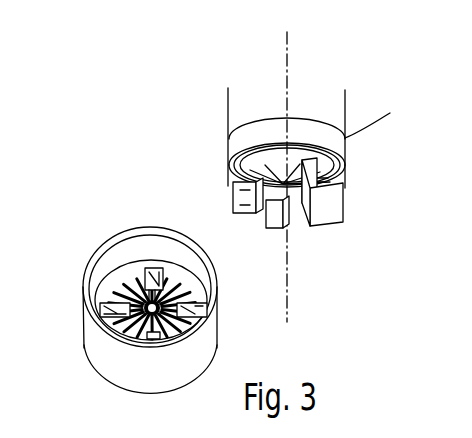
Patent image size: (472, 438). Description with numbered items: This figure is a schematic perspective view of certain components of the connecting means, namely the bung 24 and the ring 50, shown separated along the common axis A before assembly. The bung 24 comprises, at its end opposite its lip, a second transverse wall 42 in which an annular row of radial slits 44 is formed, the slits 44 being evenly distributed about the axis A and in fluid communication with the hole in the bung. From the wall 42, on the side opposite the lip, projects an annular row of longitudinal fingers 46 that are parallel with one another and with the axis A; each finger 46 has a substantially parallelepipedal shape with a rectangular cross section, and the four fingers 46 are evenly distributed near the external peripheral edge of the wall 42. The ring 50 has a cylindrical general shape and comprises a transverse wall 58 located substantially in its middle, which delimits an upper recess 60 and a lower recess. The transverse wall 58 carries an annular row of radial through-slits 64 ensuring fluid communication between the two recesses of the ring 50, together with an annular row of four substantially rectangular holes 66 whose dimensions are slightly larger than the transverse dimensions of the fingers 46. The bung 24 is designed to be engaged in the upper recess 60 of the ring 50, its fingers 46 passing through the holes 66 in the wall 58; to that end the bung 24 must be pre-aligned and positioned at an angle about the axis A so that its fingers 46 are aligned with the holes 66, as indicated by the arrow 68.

The axis A is at (289, 54).
The bung 24 is at (210, 176).
The second transverse wall 42 is at (232, 143).
The slits 44 is at (305, 160).
The longitudinal fingers 46 is at (328, 204).
The ring 50 is at (80, 375).
The transverse wall 58 is at (110, 290).
The upper recess 60 is at (111, 262).
The slits 64 is at (185, 283).
The holes 66 is at (207, 308).
The arrow 68 is at (246, 214).